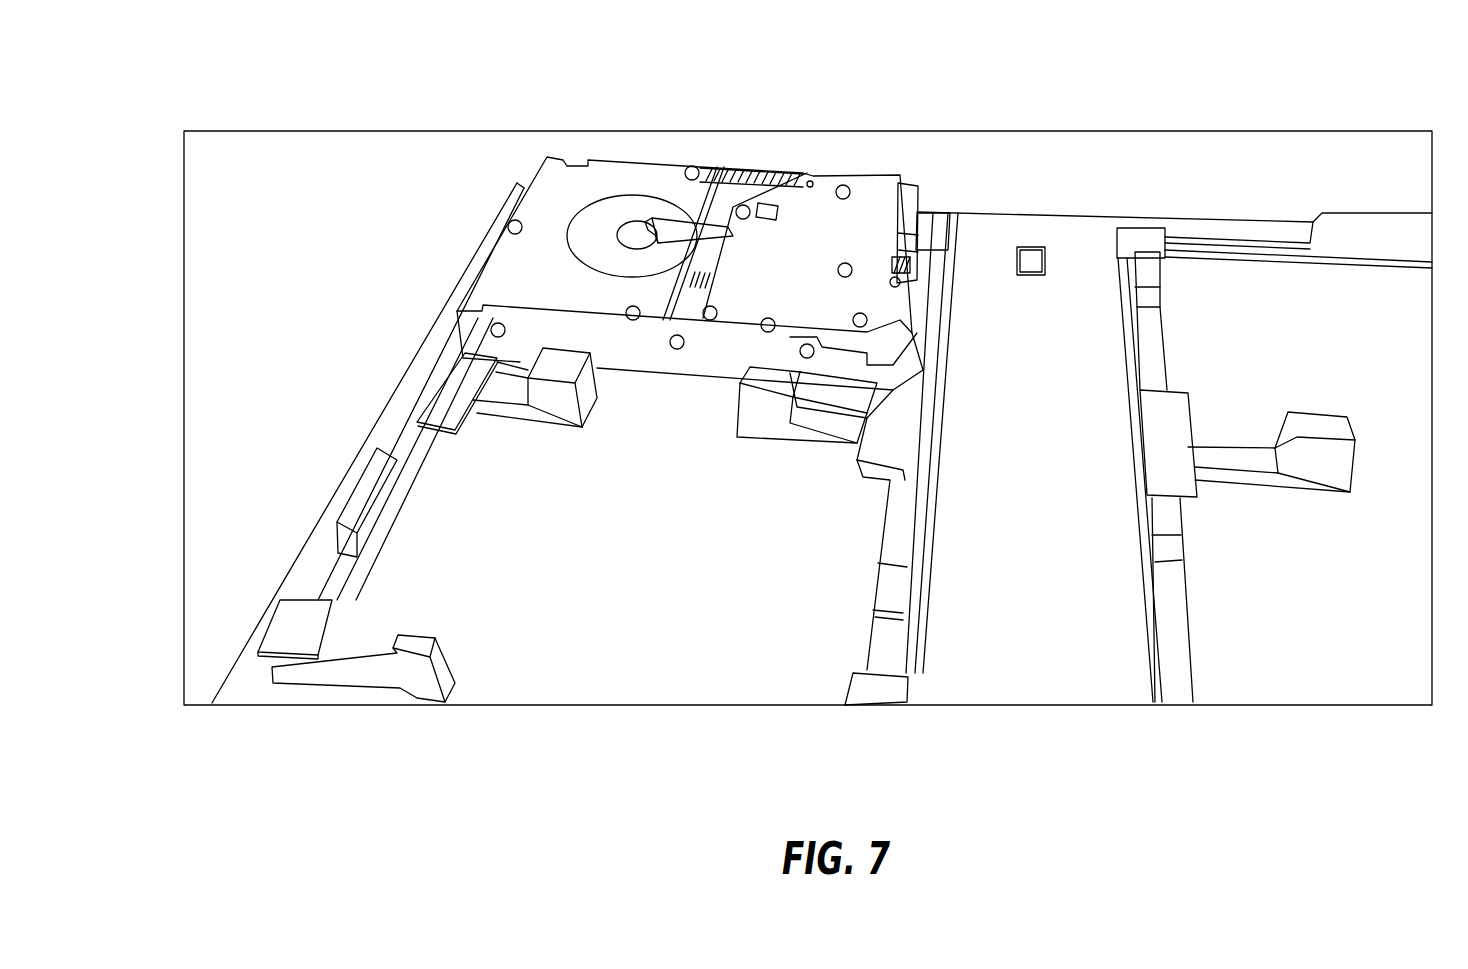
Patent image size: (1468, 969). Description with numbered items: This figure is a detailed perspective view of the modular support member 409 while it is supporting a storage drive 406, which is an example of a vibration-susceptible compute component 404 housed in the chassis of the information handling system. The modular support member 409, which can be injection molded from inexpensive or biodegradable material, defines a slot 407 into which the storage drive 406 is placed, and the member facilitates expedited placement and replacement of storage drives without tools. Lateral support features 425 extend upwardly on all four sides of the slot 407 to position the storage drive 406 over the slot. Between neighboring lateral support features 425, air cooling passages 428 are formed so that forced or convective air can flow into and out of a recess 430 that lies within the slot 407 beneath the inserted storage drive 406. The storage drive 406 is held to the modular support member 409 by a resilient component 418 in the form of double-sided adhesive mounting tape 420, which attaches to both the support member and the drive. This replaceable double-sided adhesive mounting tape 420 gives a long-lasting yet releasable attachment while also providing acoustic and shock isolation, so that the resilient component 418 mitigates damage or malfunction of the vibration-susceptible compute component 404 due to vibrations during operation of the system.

The vibration-susceptible compute component 404 is at (535, 148).
The storage drive 406 is at (603, 212).
The slot 407 is at (1283, 668).
The modular support member 409 is at (532, 650).
The resilient component 418 is at (947, 262).
The double-sided adhesive mounting tape 420 is at (443, 387).
The lateral support feature 425 is at (373, 487).
The air cooling passage 428 is at (1273, 298).
The recess 430 is at (407, 563).